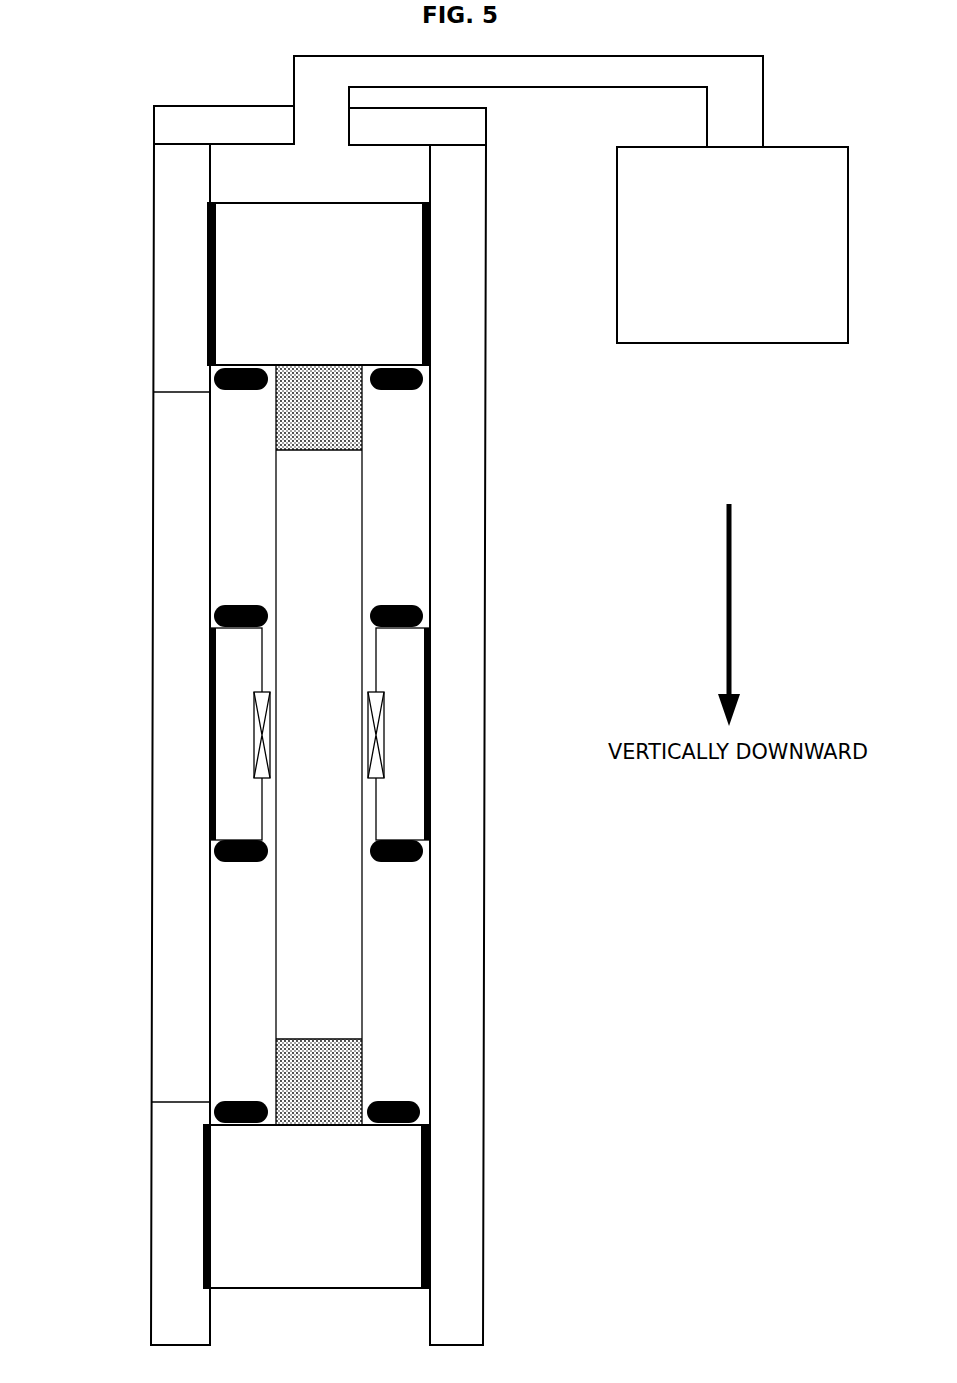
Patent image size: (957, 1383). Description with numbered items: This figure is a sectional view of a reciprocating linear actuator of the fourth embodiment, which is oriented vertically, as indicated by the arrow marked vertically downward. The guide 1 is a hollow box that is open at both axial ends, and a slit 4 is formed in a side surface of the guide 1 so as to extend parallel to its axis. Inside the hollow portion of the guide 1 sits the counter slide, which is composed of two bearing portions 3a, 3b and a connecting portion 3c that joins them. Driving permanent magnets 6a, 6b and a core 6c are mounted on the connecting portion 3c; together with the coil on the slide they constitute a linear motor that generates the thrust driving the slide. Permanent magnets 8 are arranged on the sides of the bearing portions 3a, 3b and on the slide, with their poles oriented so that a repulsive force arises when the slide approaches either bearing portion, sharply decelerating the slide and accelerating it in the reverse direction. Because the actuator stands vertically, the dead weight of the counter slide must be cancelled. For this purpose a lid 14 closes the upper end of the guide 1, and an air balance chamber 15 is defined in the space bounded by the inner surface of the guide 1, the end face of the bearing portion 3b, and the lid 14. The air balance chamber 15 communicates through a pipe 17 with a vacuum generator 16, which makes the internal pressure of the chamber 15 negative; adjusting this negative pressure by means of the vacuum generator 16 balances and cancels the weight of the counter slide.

The guide 1 is at (462, 748).
The bearing portion 3a is at (232, 1180).
The bearing portion 3b is at (230, 301).
The connecting portion 3c is at (292, 502).
The slit 4 is at (180, 594).
The permanent magnet 6a is at (335, 1053).
The permanent magnet 6b is at (342, 438).
The core 6c is at (330, 948).
The permanent magnets 8 is at (397, 389).
The lid 14 is at (222, 106).
The air balance chamber 15 is at (242, 178).
The vacuum generator 16 is at (729, 344).
The pipe 17 is at (530, 87).